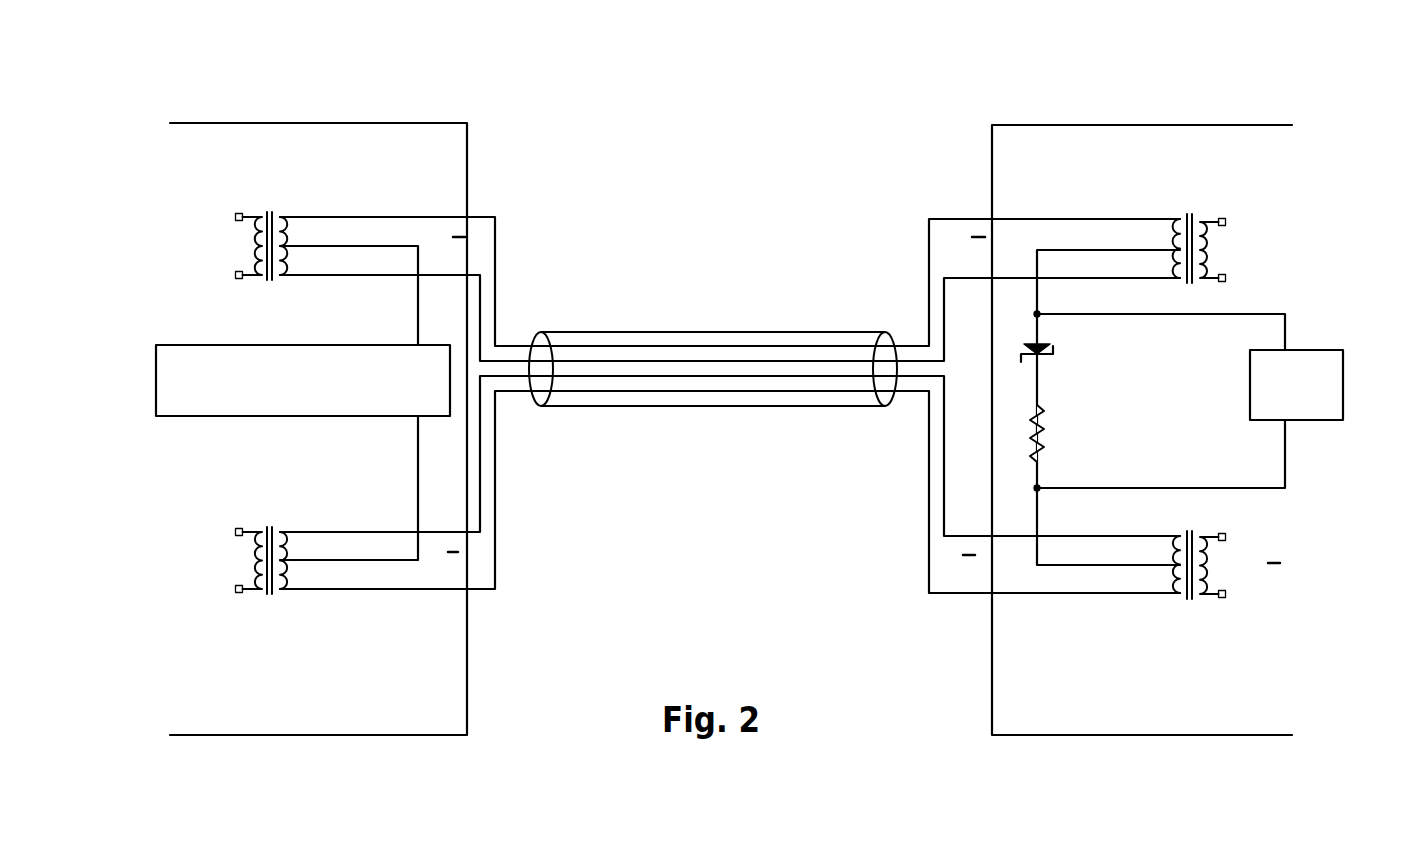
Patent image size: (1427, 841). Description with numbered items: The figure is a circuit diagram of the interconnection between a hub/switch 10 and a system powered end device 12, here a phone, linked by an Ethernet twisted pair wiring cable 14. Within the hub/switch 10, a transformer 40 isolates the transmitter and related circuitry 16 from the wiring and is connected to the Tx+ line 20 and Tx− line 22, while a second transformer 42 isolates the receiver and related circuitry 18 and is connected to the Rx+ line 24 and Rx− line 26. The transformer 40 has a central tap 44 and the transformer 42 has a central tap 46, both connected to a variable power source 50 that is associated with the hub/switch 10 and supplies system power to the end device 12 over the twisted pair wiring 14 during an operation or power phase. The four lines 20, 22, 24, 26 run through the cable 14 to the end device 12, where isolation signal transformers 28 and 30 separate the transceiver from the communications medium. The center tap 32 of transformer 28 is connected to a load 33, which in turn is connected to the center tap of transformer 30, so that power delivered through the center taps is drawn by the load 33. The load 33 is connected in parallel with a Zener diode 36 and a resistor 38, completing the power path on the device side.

The hub/switch 10 is at (302, 137).
The end device 12 is at (1067, 145).
The Ethernet twisted pair wiring cable 14 is at (698, 333).
The transmitter and related circuitry 16 is at (241, 212).
The receiver and related circuitry 18 is at (242, 527).
The Tx+ line 20 is at (480, 215).
The Tx− line 22 is at (482, 295).
The Rx+ line 24 is at (483, 498).
The Rx− line 26 is at (498, 578).
The signal transformer 28 is at (1200, 225).
The signal transformer 30 is at (1183, 596).
The center tap 32 is at (1137, 252).
The load 33 is at (1315, 363).
The Zener diode 36 is at (1038, 332).
The resistor 38 is at (1038, 403).
The transformer 40 is at (299, 234).
The transformer 42 is at (337, 525).
The central tap 44 is at (303, 247).
The central tap 46 is at (312, 559).
The variable power source 50 is at (190, 352).